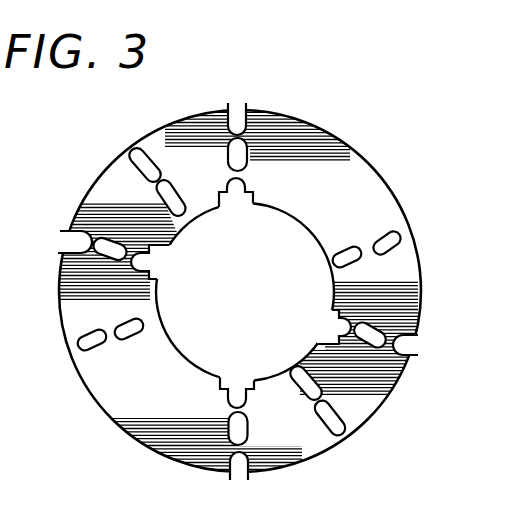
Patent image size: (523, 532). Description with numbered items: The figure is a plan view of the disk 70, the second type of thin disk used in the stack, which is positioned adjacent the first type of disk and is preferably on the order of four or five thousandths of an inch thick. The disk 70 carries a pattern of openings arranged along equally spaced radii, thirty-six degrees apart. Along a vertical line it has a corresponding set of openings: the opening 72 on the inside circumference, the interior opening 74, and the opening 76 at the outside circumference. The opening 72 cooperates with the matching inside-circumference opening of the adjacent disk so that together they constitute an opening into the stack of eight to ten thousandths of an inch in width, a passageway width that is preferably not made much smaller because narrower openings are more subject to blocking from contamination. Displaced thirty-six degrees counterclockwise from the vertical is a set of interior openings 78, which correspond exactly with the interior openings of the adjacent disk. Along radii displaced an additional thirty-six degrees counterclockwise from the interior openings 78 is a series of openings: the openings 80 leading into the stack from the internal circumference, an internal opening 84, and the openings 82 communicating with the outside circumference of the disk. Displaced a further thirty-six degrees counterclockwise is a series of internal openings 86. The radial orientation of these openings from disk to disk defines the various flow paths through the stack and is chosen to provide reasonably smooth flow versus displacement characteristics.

The disk 70 is at (402, 191).
The opening 72 is at (243, 200).
The opening 74 is at (247, 142).
The opening 76 is at (239, 107).
The interior openings 78 is at (137, 155).
The openings 80 is at (162, 278).
The openings 82 is at (70, 234).
The internal opening 84 is at (135, 255).
The internal openings 86 is at (78, 343).